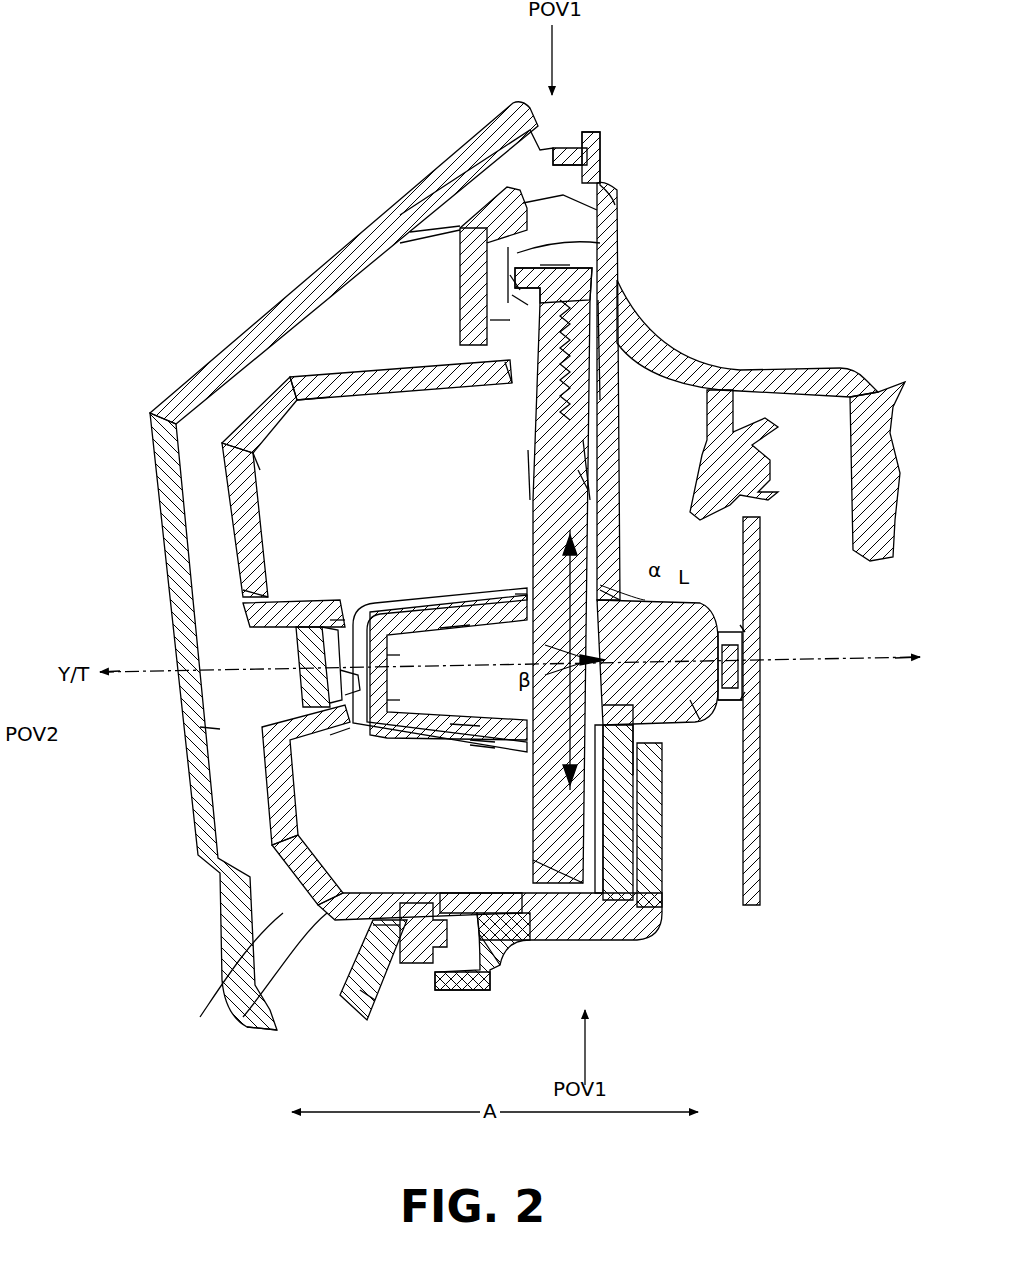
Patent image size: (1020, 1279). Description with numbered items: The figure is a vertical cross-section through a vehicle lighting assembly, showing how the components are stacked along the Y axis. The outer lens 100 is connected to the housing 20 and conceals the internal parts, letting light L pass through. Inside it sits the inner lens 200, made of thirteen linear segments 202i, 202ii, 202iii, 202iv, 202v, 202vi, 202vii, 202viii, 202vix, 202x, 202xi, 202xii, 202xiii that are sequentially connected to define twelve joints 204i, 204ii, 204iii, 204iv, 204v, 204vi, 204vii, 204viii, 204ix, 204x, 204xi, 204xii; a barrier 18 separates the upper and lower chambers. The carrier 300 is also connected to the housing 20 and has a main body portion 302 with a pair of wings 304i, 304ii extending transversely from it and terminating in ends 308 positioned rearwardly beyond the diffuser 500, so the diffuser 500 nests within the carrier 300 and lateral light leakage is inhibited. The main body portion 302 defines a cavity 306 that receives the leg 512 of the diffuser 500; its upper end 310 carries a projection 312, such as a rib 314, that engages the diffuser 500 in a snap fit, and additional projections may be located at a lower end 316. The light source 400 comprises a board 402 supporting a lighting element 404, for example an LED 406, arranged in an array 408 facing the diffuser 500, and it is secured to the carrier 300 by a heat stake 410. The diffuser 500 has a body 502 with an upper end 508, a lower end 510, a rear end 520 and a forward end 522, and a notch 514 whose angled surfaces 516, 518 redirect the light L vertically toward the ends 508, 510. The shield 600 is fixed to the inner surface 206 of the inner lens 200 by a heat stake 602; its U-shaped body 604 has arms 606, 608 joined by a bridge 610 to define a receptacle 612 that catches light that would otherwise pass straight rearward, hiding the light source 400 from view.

The outer lens 100 is at (196, 330).
The inner lens 200 is at (208, 577).
The barrier 18 is at (240, 680).
The housing 20 is at (532, 255).
The segment 202i is at (590, 140).
The segment 202ii is at (497, 272).
The segment 202iii is at (372, 378).
The segment 202iv is at (270, 426).
The segment 202v is at (250, 526).
The segment 202vi is at (292, 605).
The segment 202vii is at (372, 624).
The segment 202viii is at (296, 745).
The segment 202vix is at (286, 828).
The segment 202x is at (318, 888).
The segment 202xi is at (395, 905).
The segment 202xii is at (500, 880).
The segment 202xiii is at (405, 940).
The joint 204i is at (558, 263).
The joint 204ii is at (515, 366).
The joint 204iii is at (302, 402).
The joint 204iv is at (256, 456).
The joint 204v is at (250, 597).
The joint 204vi is at (342, 618).
The joint 204vii is at (350, 745).
The joint 204viii is at (240, 730).
The joint 204ix is at (215, 907).
The joint 204x is at (245, 1026).
The joint 204xi is at (380, 936).
The joint 204xii is at (370, 986).
The inner surface 206 is at (335, 680).
The carrier 300 is at (609, 344).
The main body portion 302 is at (642, 371).
The wing 304i is at (605, 275).
The wing 304ii is at (530, 930).
The cavity 306 is at (710, 620).
The end 308 is at (515, 283).
The upper end 310 is at (617, 267).
The projection 312 is at (518, 299).
The rib 314 is at (510, 321).
The lower end 316 is at (486, 945).
The light source 400 is at (805, 675).
The board 402 is at (760, 800).
The lighting element 404 is at (745, 640).
The LED 406 is at (752, 658).
The array 408 is at (741, 702).
The heat stake 410 is at (745, 626).
The diffuser 500 is at (598, 422).
The body 502 is at (592, 462).
The upper end 508 is at (593, 287).
The lower end 510 is at (572, 884).
The leg 512 is at (695, 707).
The notch 514 is at (640, 748).
The angled surface 516 is at (527, 598).
The angled surface 518 is at (482, 744).
The rear end 520 is at (536, 470).
The forward end 522 is at (589, 486).
The shield 600 is at (462, 772).
The heat stake 602 is at (392, 660).
The body 604 is at (482, 750).
The arm 606 is at (455, 627).
The arm 608 is at (462, 727).
The bridge 610 is at (392, 700).
The receptacle 612 is at (605, 593).